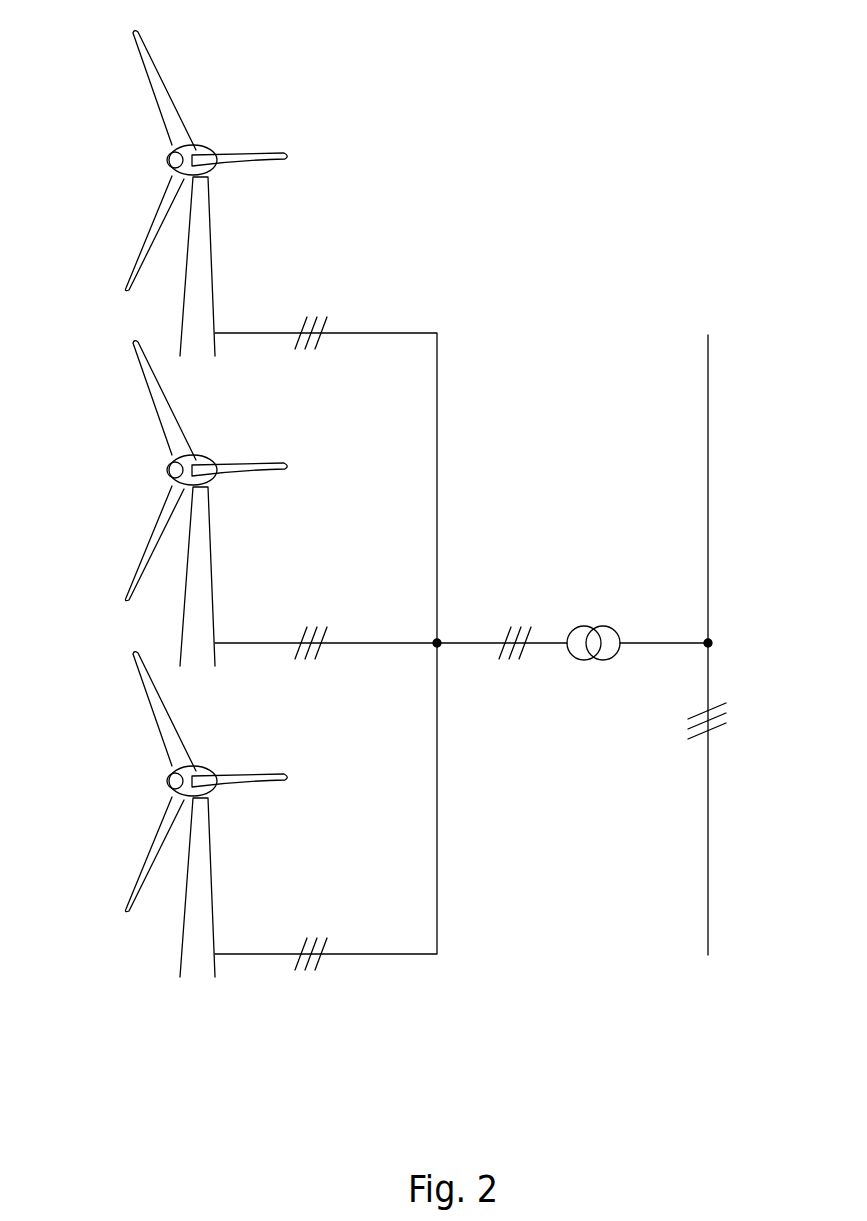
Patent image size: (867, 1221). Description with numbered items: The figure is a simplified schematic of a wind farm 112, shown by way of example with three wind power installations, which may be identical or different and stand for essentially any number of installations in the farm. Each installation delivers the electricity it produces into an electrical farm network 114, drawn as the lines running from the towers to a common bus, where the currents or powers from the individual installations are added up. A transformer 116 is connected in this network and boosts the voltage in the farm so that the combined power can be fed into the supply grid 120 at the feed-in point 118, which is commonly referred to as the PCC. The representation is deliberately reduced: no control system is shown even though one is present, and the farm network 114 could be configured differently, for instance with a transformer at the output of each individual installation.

The wind farm 112 is at (516, 156).
The electrical farm network 114 is at (460, 643).
The transformer 116 is at (597, 615).
The feed-in point 118 is at (722, 622).
The supply grid 120 is at (710, 362).